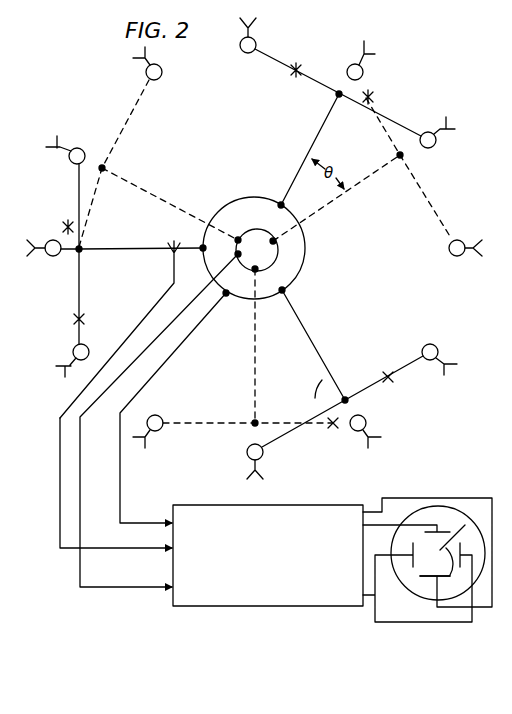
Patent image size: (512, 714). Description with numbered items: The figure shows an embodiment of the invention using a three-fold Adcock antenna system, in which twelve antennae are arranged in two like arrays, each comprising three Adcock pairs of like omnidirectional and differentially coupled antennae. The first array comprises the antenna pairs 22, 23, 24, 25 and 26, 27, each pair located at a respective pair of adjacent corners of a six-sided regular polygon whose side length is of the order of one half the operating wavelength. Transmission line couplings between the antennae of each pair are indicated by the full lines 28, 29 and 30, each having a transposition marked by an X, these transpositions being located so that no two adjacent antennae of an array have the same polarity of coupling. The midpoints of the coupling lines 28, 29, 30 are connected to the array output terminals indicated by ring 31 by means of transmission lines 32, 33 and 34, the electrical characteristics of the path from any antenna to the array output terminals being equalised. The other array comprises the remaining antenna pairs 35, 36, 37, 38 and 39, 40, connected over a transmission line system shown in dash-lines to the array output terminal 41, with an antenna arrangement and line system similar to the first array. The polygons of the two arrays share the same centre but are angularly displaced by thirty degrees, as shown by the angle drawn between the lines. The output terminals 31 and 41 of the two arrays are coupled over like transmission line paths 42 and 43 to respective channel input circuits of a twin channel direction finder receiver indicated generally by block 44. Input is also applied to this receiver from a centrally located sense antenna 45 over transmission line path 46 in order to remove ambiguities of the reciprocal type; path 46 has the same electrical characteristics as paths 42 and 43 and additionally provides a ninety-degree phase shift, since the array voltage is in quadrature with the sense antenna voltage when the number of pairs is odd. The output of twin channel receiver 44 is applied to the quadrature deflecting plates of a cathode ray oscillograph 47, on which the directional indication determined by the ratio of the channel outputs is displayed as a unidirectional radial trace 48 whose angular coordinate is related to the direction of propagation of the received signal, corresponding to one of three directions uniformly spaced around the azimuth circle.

The antenna 22 is at (256, 45).
The antenna 23 is at (425, 133).
The antenna 24 is at (438, 351).
The antenna 25 is at (263, 453).
The antenna 26 is at (73, 352).
The antenna 27 is at (78, 148).
The transmission line coupling 28 is at (318, 84).
The transmission line coupling 29 is at (353, 395).
The transmission line coupling 30 is at (84, 253).
The array output terminals 31 is at (304, 239).
The transmission line 32 is at (301, 164).
The transmission line 33 is at (299, 318).
The transmission line 34 is at (142, 239).
The antenna 35 is at (363, 72).
The antenna 36 is at (457, 240).
The antenna 37 is at (366, 424).
The antenna 38 is at (160, 432).
The antenna 39 is at (52, 241).
The antenna 40 is at (162, 73).
The array output terminal 41 is at (277, 259).
The transmission line path 42 is at (189, 335).
The transmission line path 43 is at (150, 347).
The twin channel direction finder receiver 44 is at (272, 606).
The sense antenna 45 is at (172, 280).
The transmission line path 46 is at (60, 470).
The cathode ray oscillograph 47 is at (455, 509).
The unidirectional radial trace 48 is at (447, 579).